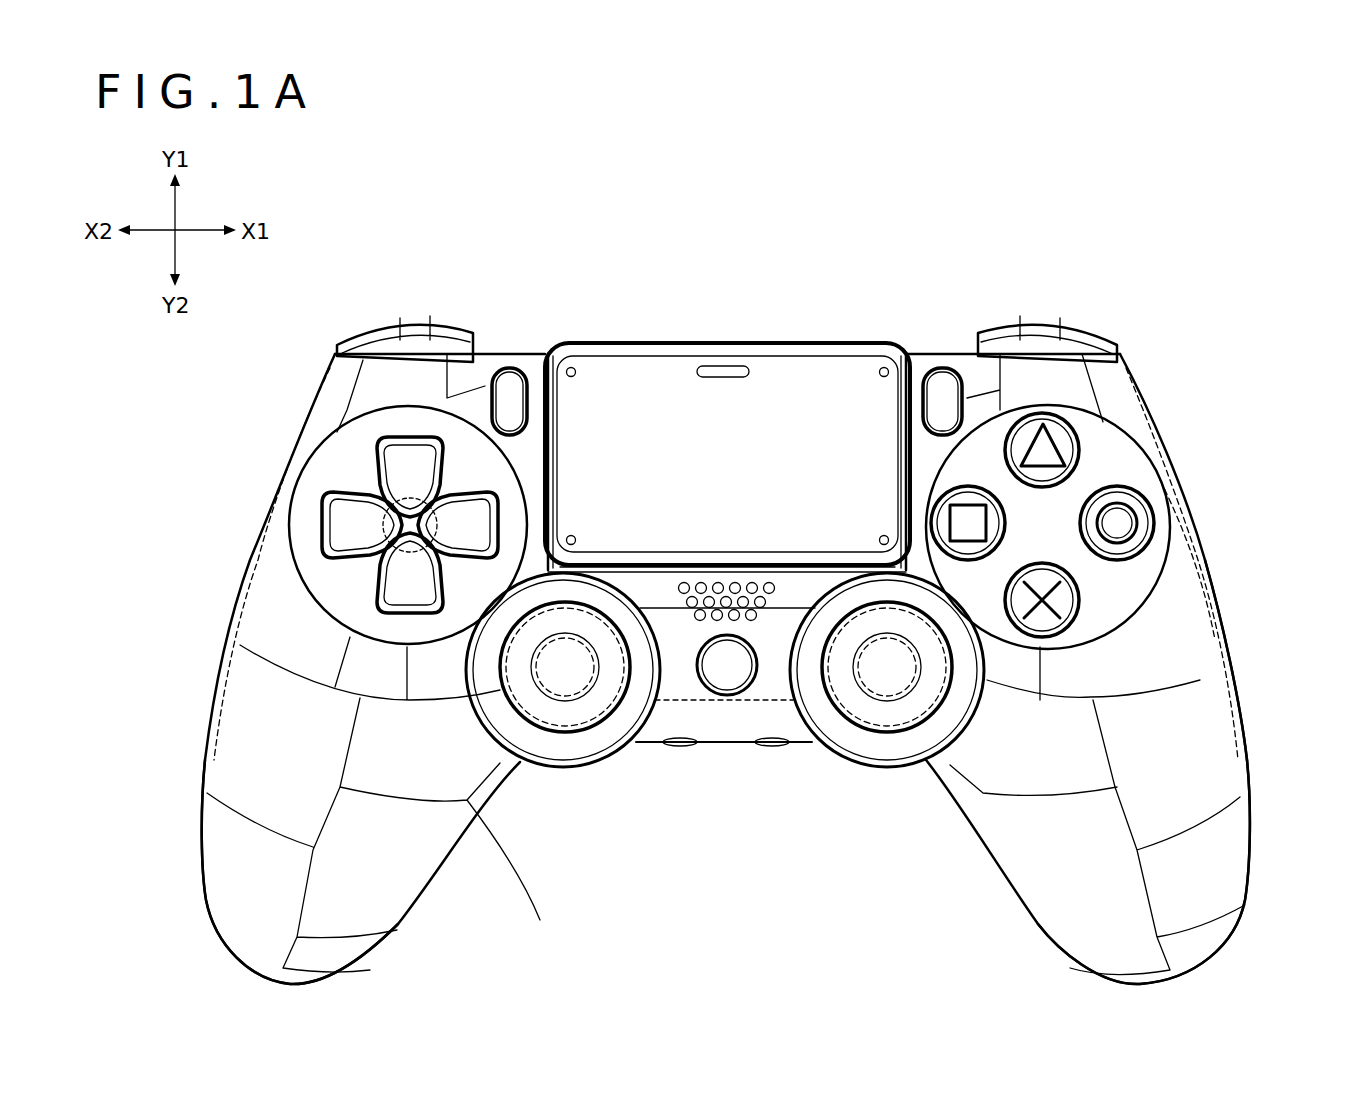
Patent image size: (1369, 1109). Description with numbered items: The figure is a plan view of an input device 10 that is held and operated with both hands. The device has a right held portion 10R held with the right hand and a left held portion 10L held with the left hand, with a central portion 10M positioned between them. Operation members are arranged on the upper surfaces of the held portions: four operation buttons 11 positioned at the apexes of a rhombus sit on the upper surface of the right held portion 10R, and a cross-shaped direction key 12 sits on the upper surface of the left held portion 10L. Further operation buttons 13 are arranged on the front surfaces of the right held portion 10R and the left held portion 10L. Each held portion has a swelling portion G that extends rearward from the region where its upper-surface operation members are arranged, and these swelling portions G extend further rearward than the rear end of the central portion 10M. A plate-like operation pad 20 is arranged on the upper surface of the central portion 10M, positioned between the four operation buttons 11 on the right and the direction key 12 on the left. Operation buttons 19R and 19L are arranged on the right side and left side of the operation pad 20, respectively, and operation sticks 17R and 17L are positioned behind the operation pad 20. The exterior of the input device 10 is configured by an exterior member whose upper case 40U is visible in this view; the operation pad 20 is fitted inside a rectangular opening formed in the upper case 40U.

The input device 10 is at (941, 233).
The left held portion 10L is at (258, 532).
The right held portion 10R is at (1202, 616).
The central portion 10M is at (970, 342).
The operation buttons 11 is at (1005, 512).
The direction key 12 is at (380, 470).
The operation buttons 13 is at (402, 332).
The operation stick 17L is at (567, 703).
The operation stick 17R is at (887, 703).
The operation button 19L is at (503, 385).
The operation button 19R is at (947, 387).
The operation pad 20 is at (781, 534).
The upper case 40U is at (1187, 570).
The swelling portion G is at (207, 753).